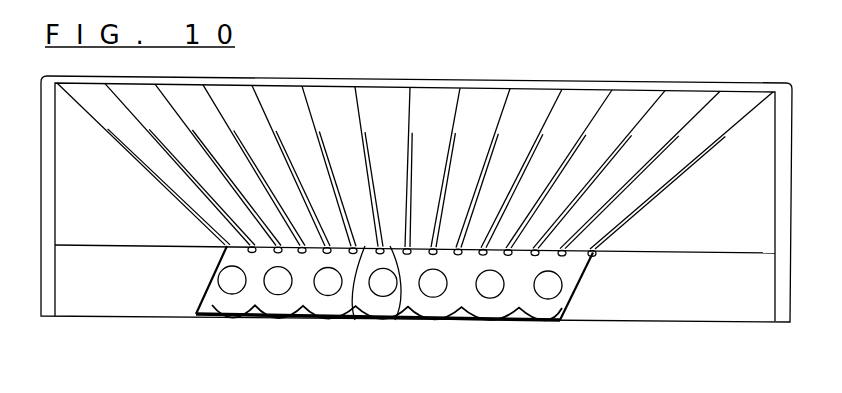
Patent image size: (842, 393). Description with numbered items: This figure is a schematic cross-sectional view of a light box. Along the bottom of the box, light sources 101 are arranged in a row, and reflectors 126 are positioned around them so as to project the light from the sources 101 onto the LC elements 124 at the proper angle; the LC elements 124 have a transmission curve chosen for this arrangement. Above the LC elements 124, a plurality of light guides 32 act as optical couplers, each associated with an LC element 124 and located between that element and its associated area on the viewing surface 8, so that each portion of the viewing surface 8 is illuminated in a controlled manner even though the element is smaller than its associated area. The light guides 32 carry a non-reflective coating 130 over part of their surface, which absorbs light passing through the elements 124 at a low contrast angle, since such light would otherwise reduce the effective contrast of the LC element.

The viewing surface 8 is at (537, 87).
The light guides 32 is at (382, 107).
The LC elements 124 is at (227, 252).
The reflectors 126 is at (235, 316).
The light sources 101 is at (277, 295).
The non-reflective coating 130 is at (395, 320).